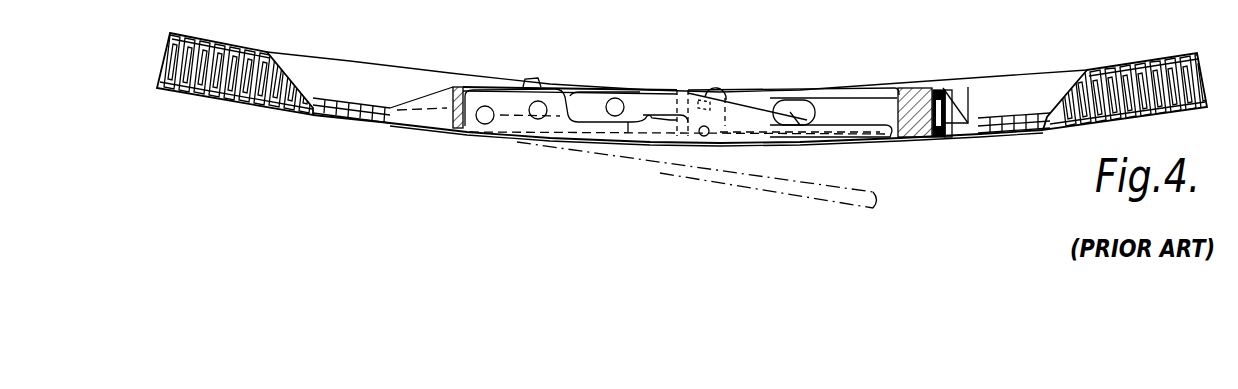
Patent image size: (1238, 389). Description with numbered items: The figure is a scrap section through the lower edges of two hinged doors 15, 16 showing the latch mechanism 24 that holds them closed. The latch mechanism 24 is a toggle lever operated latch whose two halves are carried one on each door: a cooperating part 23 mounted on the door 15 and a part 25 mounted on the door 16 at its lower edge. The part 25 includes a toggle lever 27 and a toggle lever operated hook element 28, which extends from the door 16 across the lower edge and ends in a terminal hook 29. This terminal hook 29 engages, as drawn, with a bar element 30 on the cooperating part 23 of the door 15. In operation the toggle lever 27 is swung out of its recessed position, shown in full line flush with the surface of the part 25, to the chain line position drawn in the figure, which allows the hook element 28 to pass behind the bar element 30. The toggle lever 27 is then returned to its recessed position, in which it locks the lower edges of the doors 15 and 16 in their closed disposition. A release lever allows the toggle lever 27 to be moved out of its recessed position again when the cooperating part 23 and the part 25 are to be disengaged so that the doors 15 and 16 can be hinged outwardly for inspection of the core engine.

The door 15 is at (972, 90).
The door 16 is at (398, 82).
The cooperating part 23 is at (739, 82).
The latch mechanism 24 is at (580, 58).
The part 25 is at (576, 150).
The toggle lever 27 is at (630, 128).
The hook element 28 is at (648, 95).
The terminal hook 29 is at (806, 100).
The bar element 30 is at (800, 125).